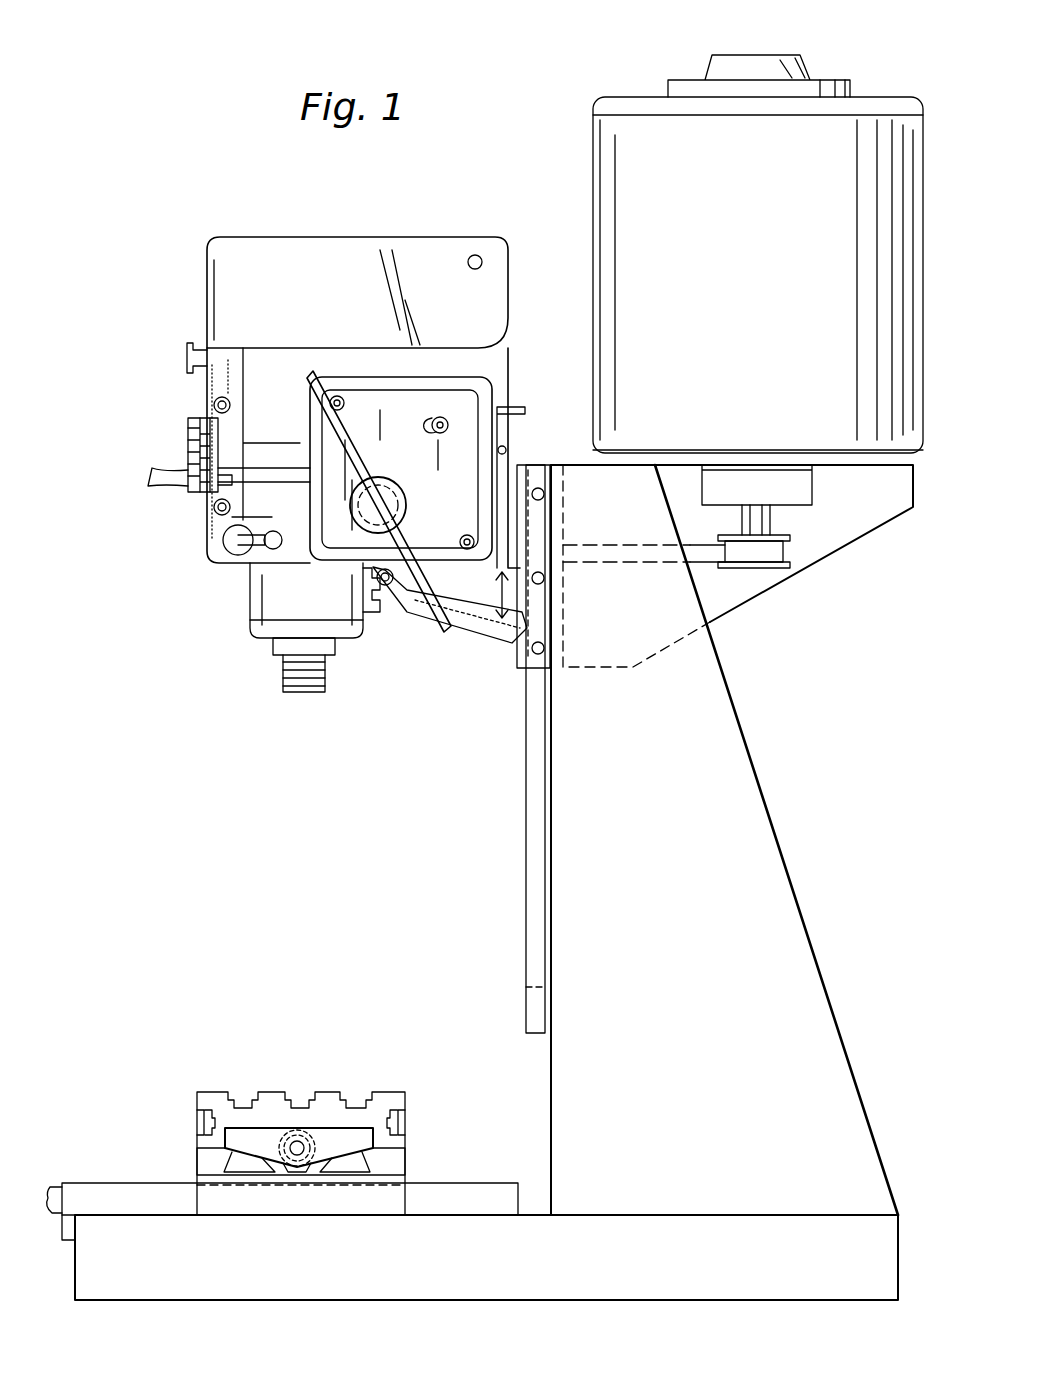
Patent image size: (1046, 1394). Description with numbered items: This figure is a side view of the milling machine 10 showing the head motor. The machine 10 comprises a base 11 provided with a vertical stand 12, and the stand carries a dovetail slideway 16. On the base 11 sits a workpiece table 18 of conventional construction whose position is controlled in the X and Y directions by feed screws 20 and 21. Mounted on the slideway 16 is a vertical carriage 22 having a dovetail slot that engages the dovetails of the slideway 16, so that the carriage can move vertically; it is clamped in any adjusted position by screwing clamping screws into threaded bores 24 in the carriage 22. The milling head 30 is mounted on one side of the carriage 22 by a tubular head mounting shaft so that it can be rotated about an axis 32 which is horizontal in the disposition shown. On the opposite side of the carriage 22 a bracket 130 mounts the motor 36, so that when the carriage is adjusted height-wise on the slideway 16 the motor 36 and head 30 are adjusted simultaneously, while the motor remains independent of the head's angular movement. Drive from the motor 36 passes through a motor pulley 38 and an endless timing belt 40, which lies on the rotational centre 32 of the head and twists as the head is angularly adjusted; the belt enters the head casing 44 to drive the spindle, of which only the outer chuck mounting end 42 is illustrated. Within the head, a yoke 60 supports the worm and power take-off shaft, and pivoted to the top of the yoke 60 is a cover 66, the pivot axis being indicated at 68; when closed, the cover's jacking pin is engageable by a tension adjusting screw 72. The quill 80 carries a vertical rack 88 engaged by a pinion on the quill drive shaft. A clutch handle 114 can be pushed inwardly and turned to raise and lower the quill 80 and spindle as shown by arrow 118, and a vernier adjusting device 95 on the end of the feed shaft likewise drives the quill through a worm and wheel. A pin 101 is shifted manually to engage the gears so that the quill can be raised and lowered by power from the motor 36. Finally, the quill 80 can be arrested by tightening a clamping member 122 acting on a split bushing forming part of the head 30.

The machine 10 is at (812, 1046).
The base 11 is at (484, 1262).
The vertical stand 12 is at (670, 896).
The dovetail slideway 16 is at (526, 795).
The workpiece table 18 is at (217, 1092).
The feed screw 20 is at (300, 1147).
The feed screw 21 is at (58, 1187).
The vertical carriage 22 is at (520, 635).
The threaded bores 24 is at (545, 497).
The milling head 30 is at (190, 407).
The axis 32 is at (600, 565).
The motor 36 is at (758, 354).
The motor pulley 38 is at (770, 570).
The endless timing belt 40 is at (700, 562).
The outer chuck mounting end 42 is at (283, 676).
The head casing 44 is at (232, 518).
The yoke 60 is at (510, 378).
The cover 66 is at (326, 304).
The pivot point 68 is at (475, 255).
The tension adjusting screw 72 is at (186, 355).
The quill 80 is at (308, 607).
The rack 88 is at (372, 592).
The vernier adjusting device 95 is at (188, 447).
The pin 101 is at (440, 417).
The handle 114 is at (312, 372).
The arrow 118 is at (502, 590).
The clamping member 122 is at (247, 546).
The bracket 130 is at (868, 510).